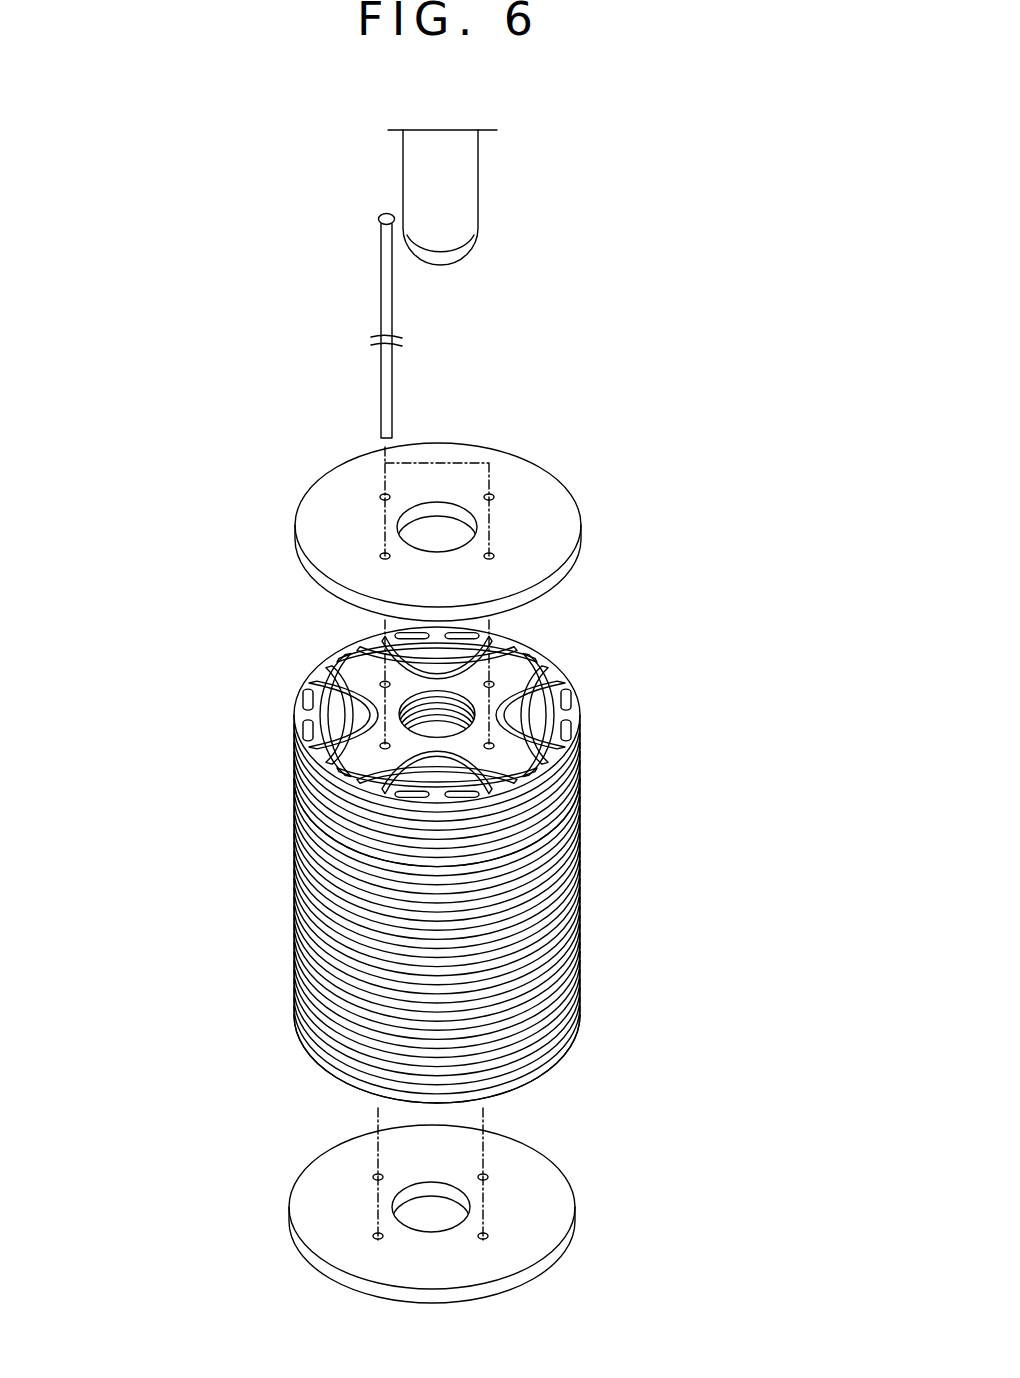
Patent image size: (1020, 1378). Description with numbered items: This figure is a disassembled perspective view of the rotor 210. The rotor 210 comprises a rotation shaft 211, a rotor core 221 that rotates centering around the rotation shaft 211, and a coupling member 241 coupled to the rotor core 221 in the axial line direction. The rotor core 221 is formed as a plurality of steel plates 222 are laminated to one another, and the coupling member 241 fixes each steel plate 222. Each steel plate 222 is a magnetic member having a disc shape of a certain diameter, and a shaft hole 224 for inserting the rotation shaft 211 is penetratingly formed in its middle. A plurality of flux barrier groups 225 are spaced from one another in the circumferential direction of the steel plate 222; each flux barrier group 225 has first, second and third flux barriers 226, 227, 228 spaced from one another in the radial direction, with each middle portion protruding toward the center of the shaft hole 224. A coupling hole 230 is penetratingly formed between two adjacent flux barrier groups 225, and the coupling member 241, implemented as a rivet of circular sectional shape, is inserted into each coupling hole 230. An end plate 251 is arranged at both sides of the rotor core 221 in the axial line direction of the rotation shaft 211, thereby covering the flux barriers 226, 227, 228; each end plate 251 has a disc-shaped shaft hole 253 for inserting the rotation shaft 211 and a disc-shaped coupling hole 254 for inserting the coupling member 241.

The rotor 210 is at (215, 318).
The rotation shaft 211 is at (458, 168).
The coupling member 241 is at (383, 275).
The end plate 251 is at (588, 512).
The shaft hole 253 is at (445, 512).
The coupling hole 254 is at (382, 555).
The rotor core 221 is at (703, 790).
The steel plate 222 is at (533, 777).
The shaft hole 224 is at (470, 697).
The flux barrier group 225 is at (178, 595).
The first flux barrier 226 is at (300, 688).
The second flux barrier 227 is at (322, 680).
The third flux barrier 228 is at (345, 668).
The coupling hole 230 is at (300, 738).